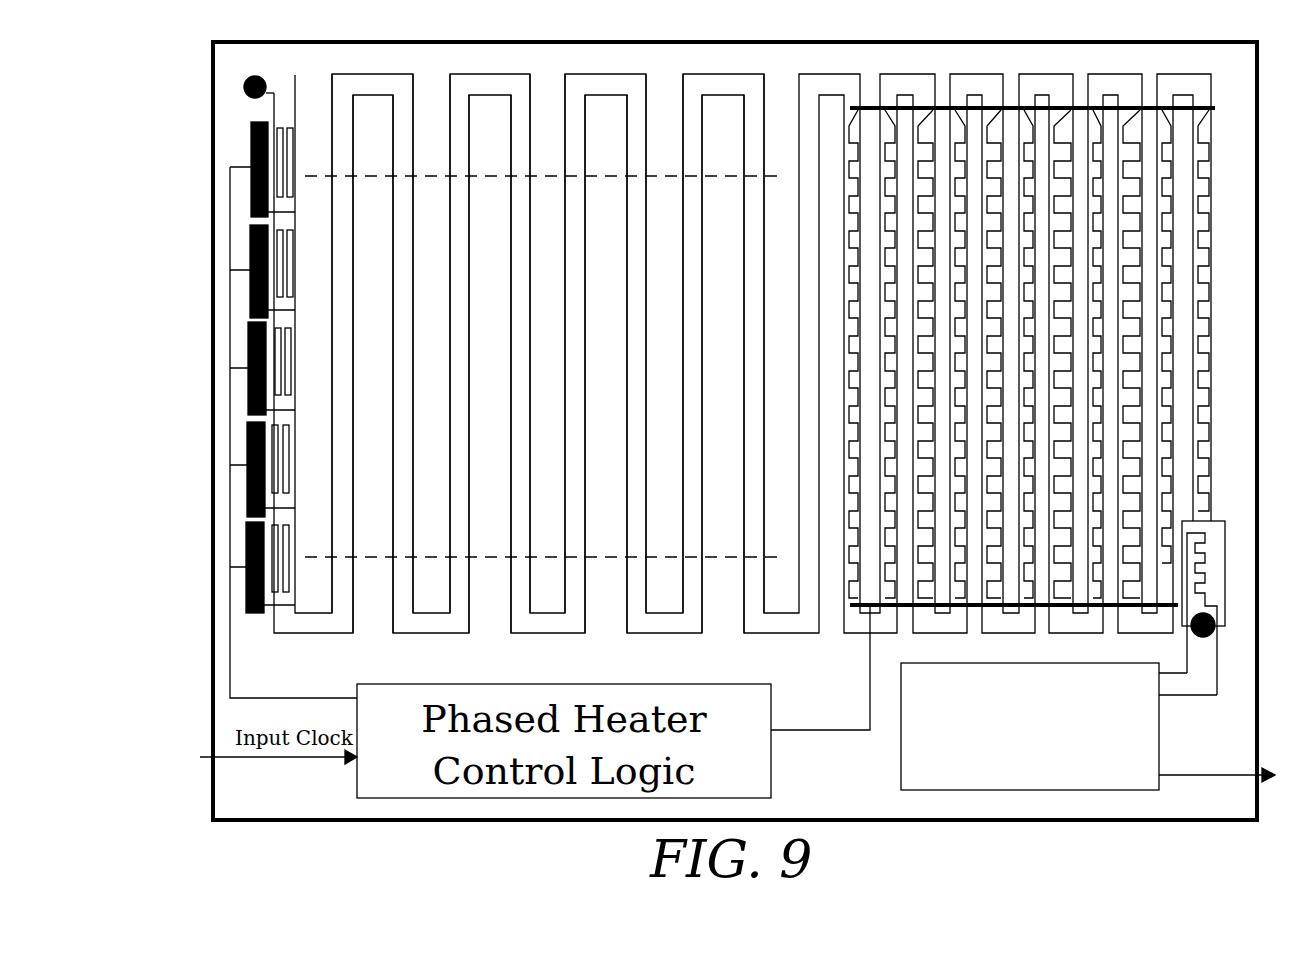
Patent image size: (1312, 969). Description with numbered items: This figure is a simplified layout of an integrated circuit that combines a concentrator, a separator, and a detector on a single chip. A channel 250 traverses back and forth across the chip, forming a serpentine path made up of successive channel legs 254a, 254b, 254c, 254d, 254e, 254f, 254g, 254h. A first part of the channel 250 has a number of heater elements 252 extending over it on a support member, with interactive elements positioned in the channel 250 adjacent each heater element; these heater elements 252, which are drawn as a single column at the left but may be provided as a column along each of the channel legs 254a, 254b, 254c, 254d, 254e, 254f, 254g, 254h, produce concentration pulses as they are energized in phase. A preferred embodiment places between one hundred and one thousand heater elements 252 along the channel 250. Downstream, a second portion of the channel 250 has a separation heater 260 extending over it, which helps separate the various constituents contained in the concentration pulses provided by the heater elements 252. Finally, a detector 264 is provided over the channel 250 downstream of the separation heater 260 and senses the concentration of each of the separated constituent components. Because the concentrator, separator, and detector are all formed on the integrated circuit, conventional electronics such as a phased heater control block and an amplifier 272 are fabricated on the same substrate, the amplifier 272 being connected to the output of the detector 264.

The channel 250 is at (377, 82).
The heater elements 252 is at (252, 180).
The channel leg 254a is at (349, 580).
The channel leg 254b is at (409, 580).
The channel leg 254c is at (465, 580).
The channel leg 254d is at (526, 580).
The channel leg 254e is at (581, 580).
The channel leg 254f is at (642, 580).
The channel leg 254g is at (698, 580).
The channel leg 254h is at (759, 580).
The separation heater 260 is at (856, 606).
The detector 264 is at (1227, 533).
The amplifier 272 is at (1125, 793).